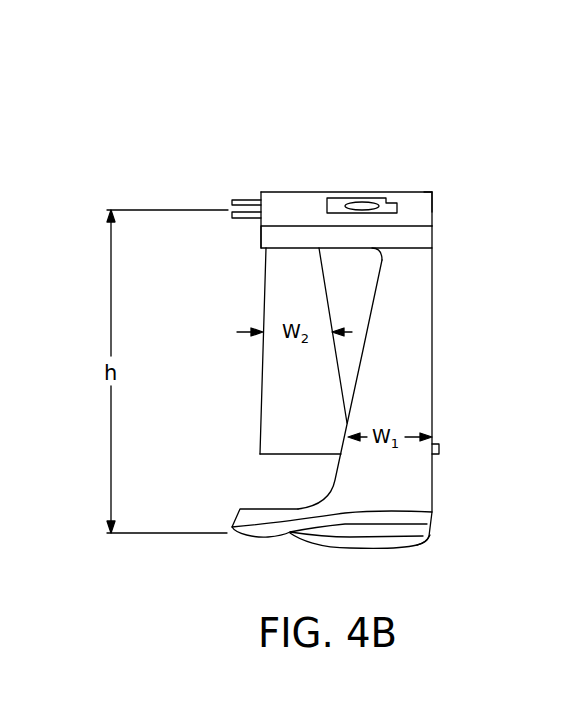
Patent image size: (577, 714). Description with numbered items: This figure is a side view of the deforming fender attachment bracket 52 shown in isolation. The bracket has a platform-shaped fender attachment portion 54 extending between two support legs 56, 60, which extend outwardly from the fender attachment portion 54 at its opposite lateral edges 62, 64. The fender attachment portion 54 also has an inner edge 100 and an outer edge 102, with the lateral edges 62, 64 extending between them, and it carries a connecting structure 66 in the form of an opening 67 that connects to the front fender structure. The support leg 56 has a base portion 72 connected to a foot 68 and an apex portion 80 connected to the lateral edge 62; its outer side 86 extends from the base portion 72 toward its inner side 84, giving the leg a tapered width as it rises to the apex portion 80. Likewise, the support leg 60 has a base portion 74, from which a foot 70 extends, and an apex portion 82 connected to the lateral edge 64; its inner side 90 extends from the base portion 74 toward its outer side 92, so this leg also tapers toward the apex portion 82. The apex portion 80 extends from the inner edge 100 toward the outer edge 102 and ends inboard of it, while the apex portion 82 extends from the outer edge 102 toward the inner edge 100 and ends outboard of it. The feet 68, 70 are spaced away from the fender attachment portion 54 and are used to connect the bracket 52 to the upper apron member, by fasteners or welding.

The deforming fender attachment bracket 52 is at (263, 174).
The fender attachment portion 54 is at (423, 138).
The lateral edge 64 is at (311, 192).
The connecting structure 66 is at (350, 202).
The opening 67 is at (364, 200).
The lateral edge 62 is at (406, 226).
The inner edge 100 is at (432, 211).
The outer edge 102 is at (247, 203).
The apex portion 82 is at (237, 230).
The apex portion 80 is at (458, 280).
The support leg 56 is at (440, 348).
The inner side 84 is at (432, 385).
The outer side 86 is at (357, 378).
The inner side 90 is at (329, 308).
The support leg 60 is at (242, 363).
The outer side 92 is at (263, 313).
The base portion 74 is at (233, 422).
The foot 70 is at (439, 450).
The base portion 72 is at (455, 502).
The foot 68 is at (382, 538).